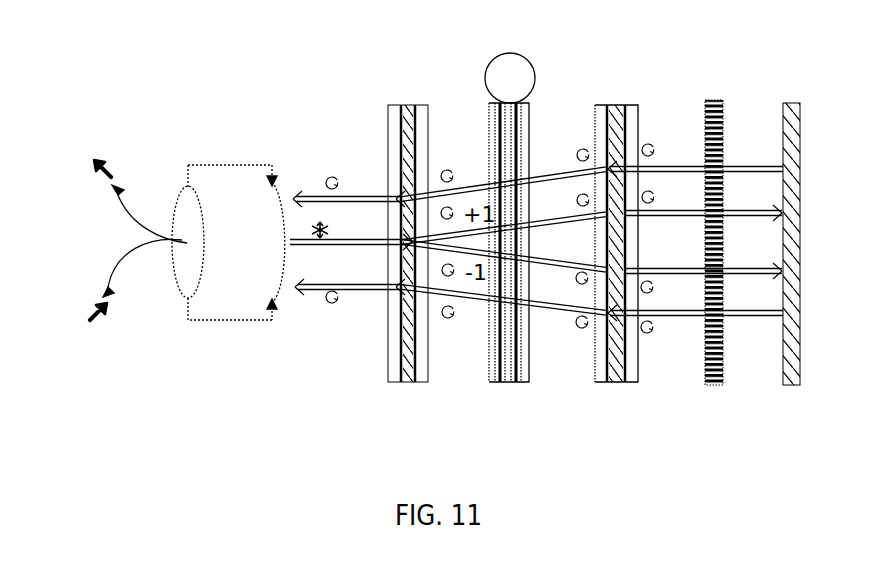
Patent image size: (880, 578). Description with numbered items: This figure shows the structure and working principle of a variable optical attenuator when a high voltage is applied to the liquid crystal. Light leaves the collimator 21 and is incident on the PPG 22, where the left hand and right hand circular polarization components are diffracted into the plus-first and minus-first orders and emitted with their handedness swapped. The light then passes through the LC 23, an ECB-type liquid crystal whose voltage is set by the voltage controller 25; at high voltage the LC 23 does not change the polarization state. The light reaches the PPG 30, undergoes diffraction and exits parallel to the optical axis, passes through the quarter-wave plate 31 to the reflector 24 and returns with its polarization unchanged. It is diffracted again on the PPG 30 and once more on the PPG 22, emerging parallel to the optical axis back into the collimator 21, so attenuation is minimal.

The collimator 21 is at (232, 298).
The PPG 22 is at (412, 382).
The LC 23 is at (517, 382).
The voltage controller 25 is at (525, 56).
The PPG 30 is at (620, 382).
The quarter-wave plate 31 is at (718, 385).
The reflector 24 is at (798, 385).